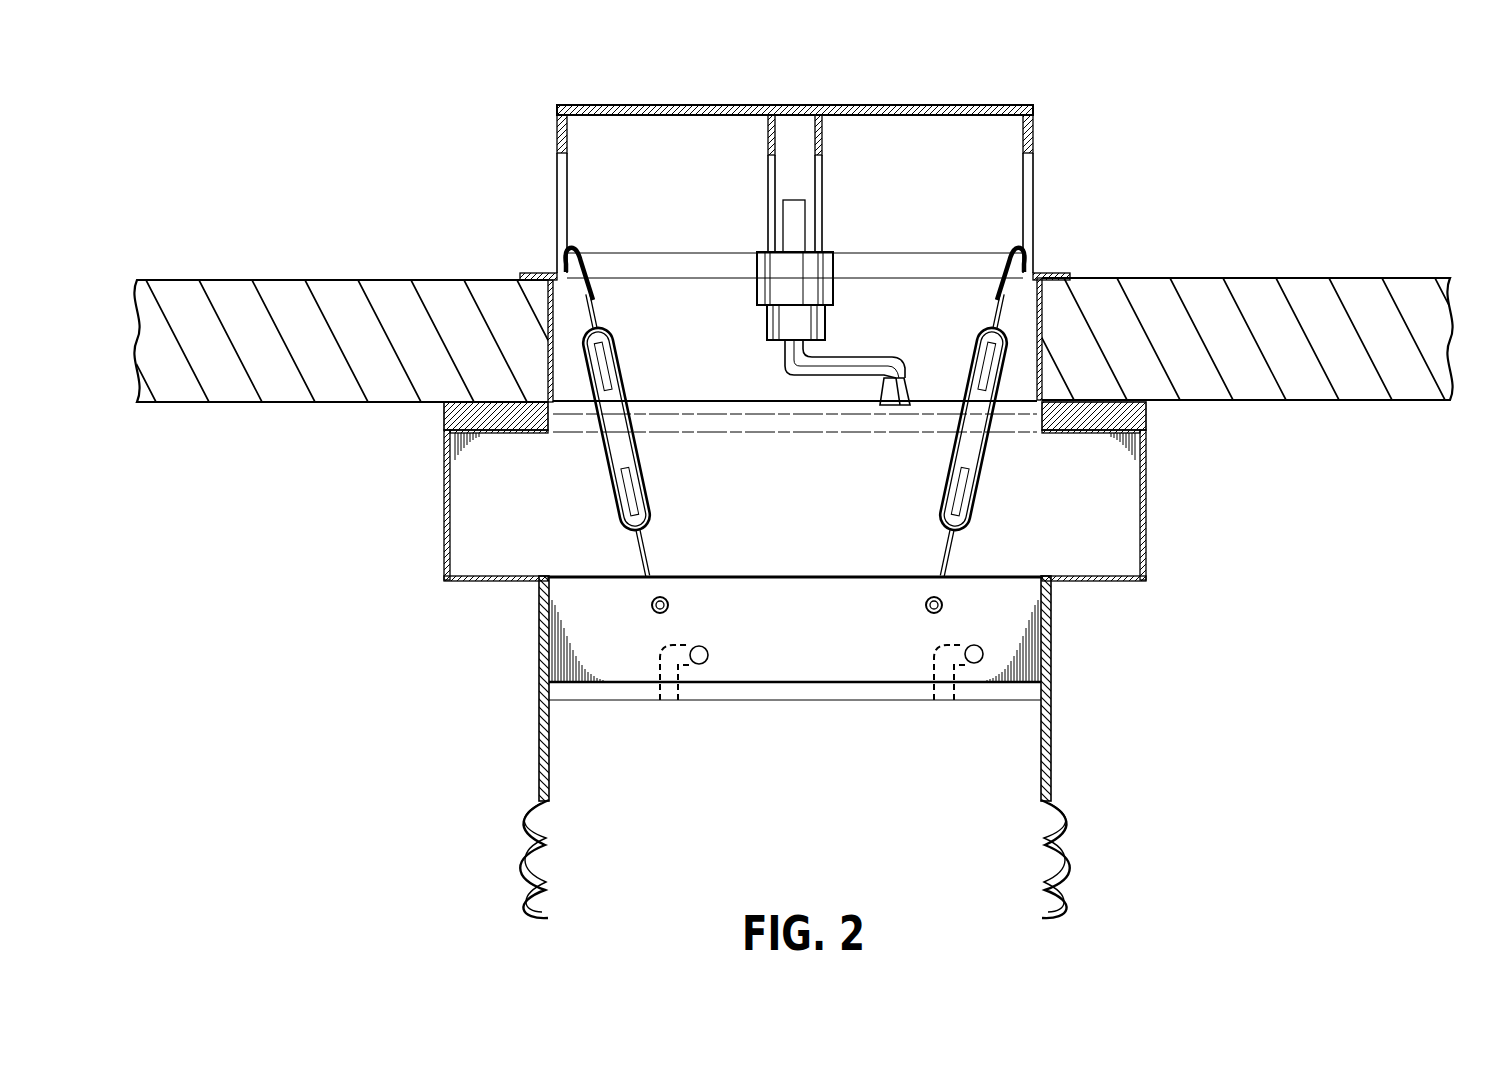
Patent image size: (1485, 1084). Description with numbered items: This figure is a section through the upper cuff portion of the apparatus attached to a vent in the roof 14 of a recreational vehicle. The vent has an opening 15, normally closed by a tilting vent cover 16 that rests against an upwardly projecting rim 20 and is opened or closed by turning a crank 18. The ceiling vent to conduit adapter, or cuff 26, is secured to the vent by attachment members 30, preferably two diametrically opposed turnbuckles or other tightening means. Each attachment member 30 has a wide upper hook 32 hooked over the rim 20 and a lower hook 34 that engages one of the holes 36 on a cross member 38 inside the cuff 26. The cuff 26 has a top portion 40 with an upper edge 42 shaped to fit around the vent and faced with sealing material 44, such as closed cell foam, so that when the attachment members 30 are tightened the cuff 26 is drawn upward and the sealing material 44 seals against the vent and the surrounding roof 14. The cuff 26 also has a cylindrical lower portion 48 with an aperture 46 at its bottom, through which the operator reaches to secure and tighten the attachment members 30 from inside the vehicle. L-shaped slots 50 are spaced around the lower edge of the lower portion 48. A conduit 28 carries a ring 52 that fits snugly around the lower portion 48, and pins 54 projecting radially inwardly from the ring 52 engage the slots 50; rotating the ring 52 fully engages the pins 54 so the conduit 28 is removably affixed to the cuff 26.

The roof of recreational vehicle 14 is at (252, 402).
The opening in air vent 15 is at (695, 236).
The vent cover 16 is at (1043, 108).
The crank 18 is at (783, 356).
The rim 20 is at (865, 252).
The cuff 26 is at (487, 583).
The conduit 28 is at (1080, 860).
The attachment members 30 is at (604, 463).
The hooks 32 is at (1013, 250).
The hooks 34 is at (670, 603).
The holes 36 is at (925, 600).
The cross member 38 is at (805, 600).
The top portion of cuff 40 is at (444, 528).
The edge of cuff 42 is at (444, 418).
The sealing material 44 is at (1146, 420).
The aperture in lower portion of cuff 46 is at (799, 712).
The lower portion of cuff 48 is at (590, 700).
The L-shaped slots 50 is at (940, 700).
The ring 52 is at (1053, 712).
The pins 54 is at (975, 665).